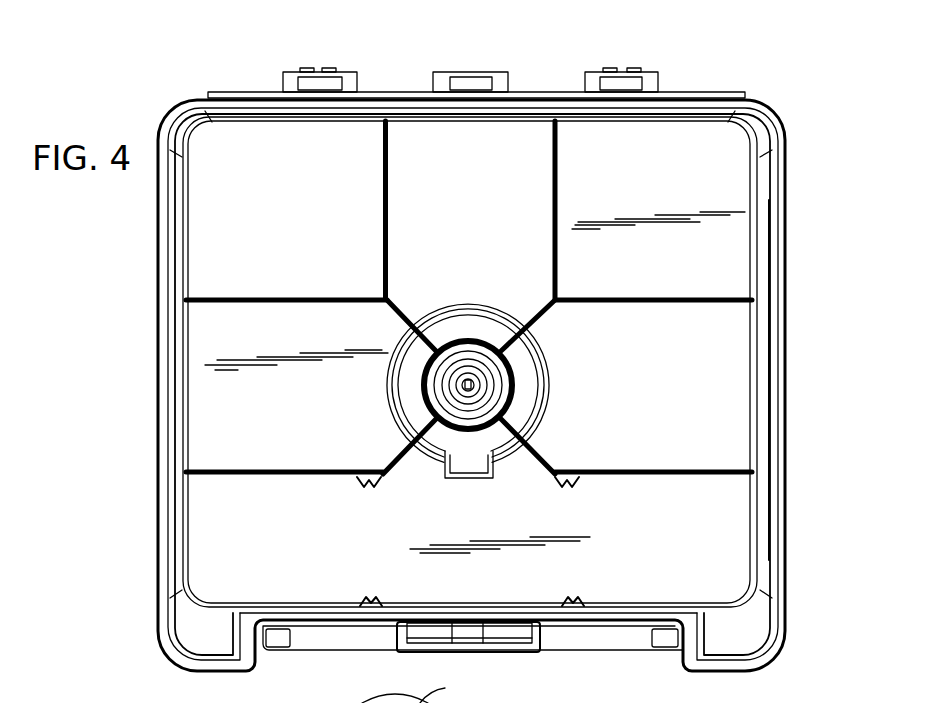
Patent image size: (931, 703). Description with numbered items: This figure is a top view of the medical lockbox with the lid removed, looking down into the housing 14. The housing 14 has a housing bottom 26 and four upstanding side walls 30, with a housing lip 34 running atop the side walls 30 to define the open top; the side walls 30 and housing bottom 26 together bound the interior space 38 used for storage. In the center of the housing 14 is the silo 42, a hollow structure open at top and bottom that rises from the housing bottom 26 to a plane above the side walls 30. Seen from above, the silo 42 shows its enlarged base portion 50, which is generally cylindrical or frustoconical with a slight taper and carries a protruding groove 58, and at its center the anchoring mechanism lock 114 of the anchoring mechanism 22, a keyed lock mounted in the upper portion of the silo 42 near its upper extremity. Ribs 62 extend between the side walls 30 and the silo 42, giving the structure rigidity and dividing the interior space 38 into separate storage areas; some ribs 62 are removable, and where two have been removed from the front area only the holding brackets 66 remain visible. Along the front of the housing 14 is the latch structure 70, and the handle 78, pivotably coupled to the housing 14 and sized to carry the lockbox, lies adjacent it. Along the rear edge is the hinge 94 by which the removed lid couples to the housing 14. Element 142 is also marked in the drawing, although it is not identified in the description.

The housing 14 is at (117, 577).
The anchoring mechanism 22 is at (483, 393).
The housing bottom 26 is at (422, 177).
The side walls 30 is at (768, 186).
The housing lip 34 is at (768, 407).
The interior space 38 is at (214, 423).
The silo 42 is at (524, 357).
The enlarged base portion 50 is at (440, 327).
The protruding groove 58 is at (468, 472).
The ribs 62 is at (385, 243).
The holding brackets 66 is at (370, 489).
The latch structure 70 is at (522, 652).
The handle 78 is at (625, 640).
The hinge 94 is at (500, 84).
The anchoring mechanism lock 114 is at (467, 379).
The bottom feature 142 is at (405, 700).